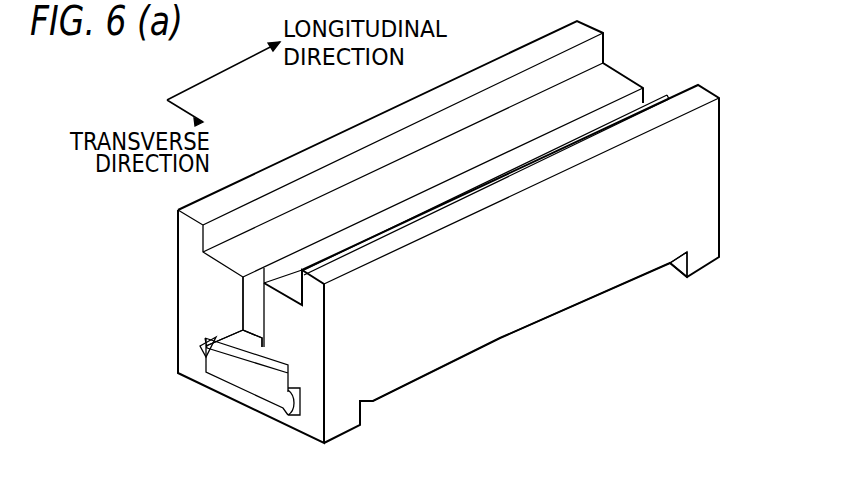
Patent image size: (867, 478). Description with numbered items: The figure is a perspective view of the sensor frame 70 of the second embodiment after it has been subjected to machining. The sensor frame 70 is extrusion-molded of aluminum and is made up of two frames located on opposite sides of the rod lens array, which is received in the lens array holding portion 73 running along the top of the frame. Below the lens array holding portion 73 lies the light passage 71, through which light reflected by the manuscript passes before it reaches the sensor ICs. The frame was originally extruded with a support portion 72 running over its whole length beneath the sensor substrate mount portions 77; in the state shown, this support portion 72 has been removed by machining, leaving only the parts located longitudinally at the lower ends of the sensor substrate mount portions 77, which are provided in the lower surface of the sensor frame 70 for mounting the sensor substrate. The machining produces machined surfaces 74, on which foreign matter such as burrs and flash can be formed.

The sensor frame 70 is at (720, 173).
The light passage 71 is at (240, 342).
The support portion 72 is at (248, 400).
The lens array holding portion 73 is at (632, 102).
The machined surfaces 74 is at (587, 301).
The sensor substrate mount portions 77 is at (212, 388).